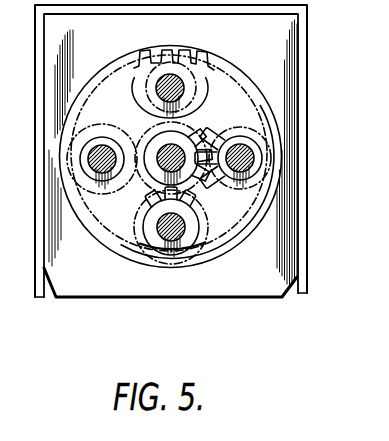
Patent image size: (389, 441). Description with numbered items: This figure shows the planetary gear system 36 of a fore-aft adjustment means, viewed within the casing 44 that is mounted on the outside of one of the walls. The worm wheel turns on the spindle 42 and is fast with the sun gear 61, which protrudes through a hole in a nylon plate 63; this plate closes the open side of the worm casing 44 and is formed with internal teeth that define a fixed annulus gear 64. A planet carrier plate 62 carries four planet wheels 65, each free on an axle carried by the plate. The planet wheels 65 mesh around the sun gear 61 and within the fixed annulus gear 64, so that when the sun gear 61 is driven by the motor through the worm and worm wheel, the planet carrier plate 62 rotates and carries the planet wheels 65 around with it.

The planetary gear system 36 is at (110, 65).
The spindle 42 is at (160, 164).
The casing 44 is at (307, 262).
The sun gear 61 is at (175, 164).
The planet carrier plate 62 is at (233, 217).
The nylon plate 63 is at (130, 283).
The annulus gear 64 is at (209, 61).
The planet wheels 65 is at (187, 256).